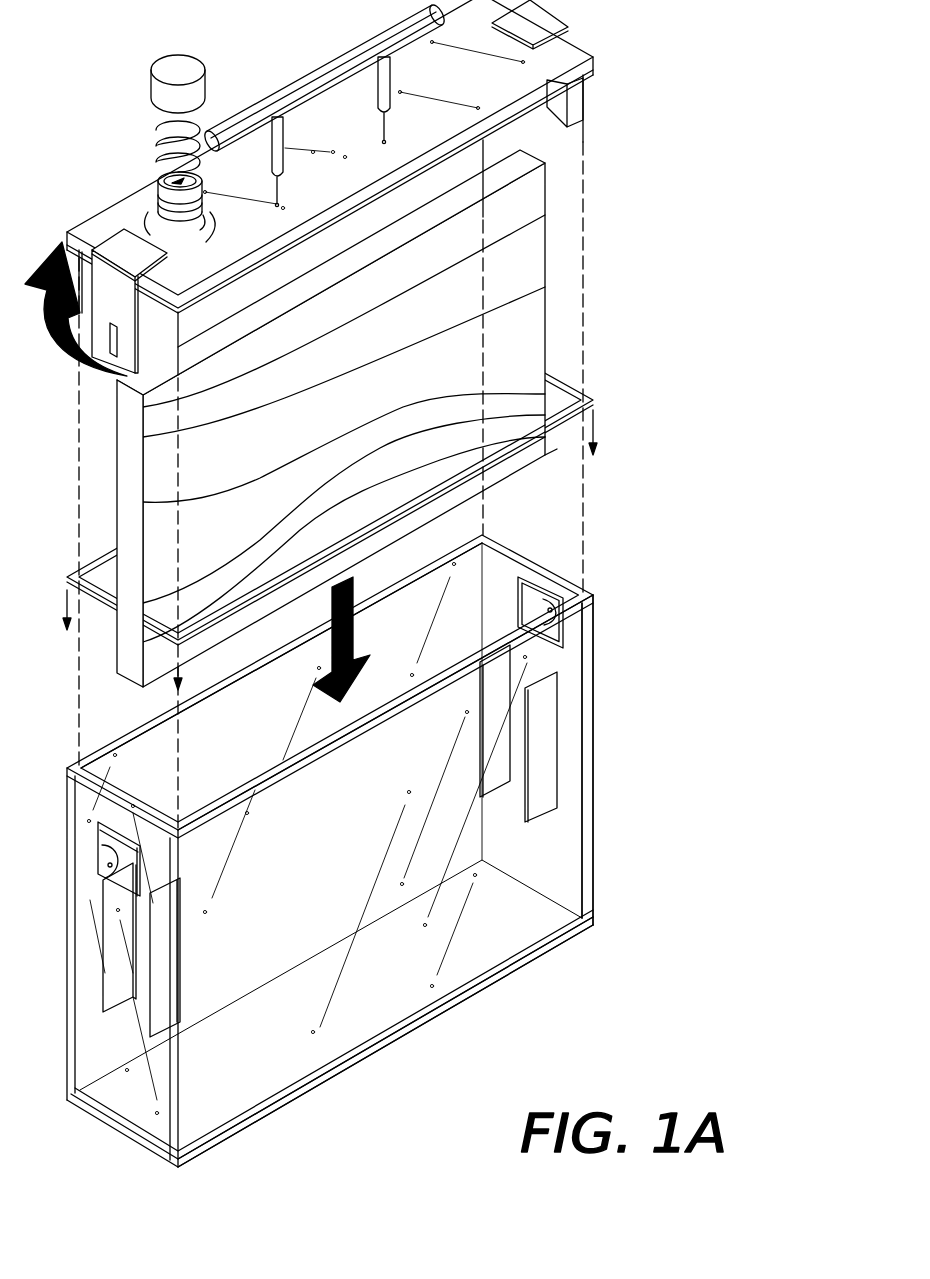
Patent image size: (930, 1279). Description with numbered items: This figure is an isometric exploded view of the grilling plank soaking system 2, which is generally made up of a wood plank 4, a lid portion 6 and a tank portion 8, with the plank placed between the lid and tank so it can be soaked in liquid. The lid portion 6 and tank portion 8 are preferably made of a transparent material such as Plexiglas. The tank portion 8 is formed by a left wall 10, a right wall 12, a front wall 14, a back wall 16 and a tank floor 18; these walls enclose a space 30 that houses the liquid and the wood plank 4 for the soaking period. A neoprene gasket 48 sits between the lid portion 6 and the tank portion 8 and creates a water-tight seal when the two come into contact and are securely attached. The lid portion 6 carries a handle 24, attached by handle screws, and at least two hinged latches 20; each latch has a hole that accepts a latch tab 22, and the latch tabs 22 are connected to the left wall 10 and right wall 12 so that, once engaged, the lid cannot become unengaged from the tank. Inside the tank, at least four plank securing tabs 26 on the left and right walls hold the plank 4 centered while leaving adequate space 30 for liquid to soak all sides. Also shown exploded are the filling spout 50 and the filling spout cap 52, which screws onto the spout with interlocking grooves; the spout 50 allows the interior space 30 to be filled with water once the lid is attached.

The grilling plank soaking system 2 is at (662, 155).
The wood plank 4 is at (140, 397).
The lid portion 6 is at (592, 55).
The tank portion 8 is at (595, 592).
The left wall 10 is at (90, 1060).
The right wall 12 is at (560, 572).
The front wall 14 is at (277, 768).
The back wall 16 is at (152, 716).
The tank floor 18 is at (350, 1068).
The hinged latch 20 is at (132, 250).
The latch tab 22 is at (100, 870).
The handle 24 is at (348, 50).
The plank securing tab 26 is at (152, 903).
The space 30 is at (347, 696).
The neoprene gasket 48 is at (593, 400).
The filling spout 50 is at (157, 177).
The filling spout cap 52 is at (177, 72).